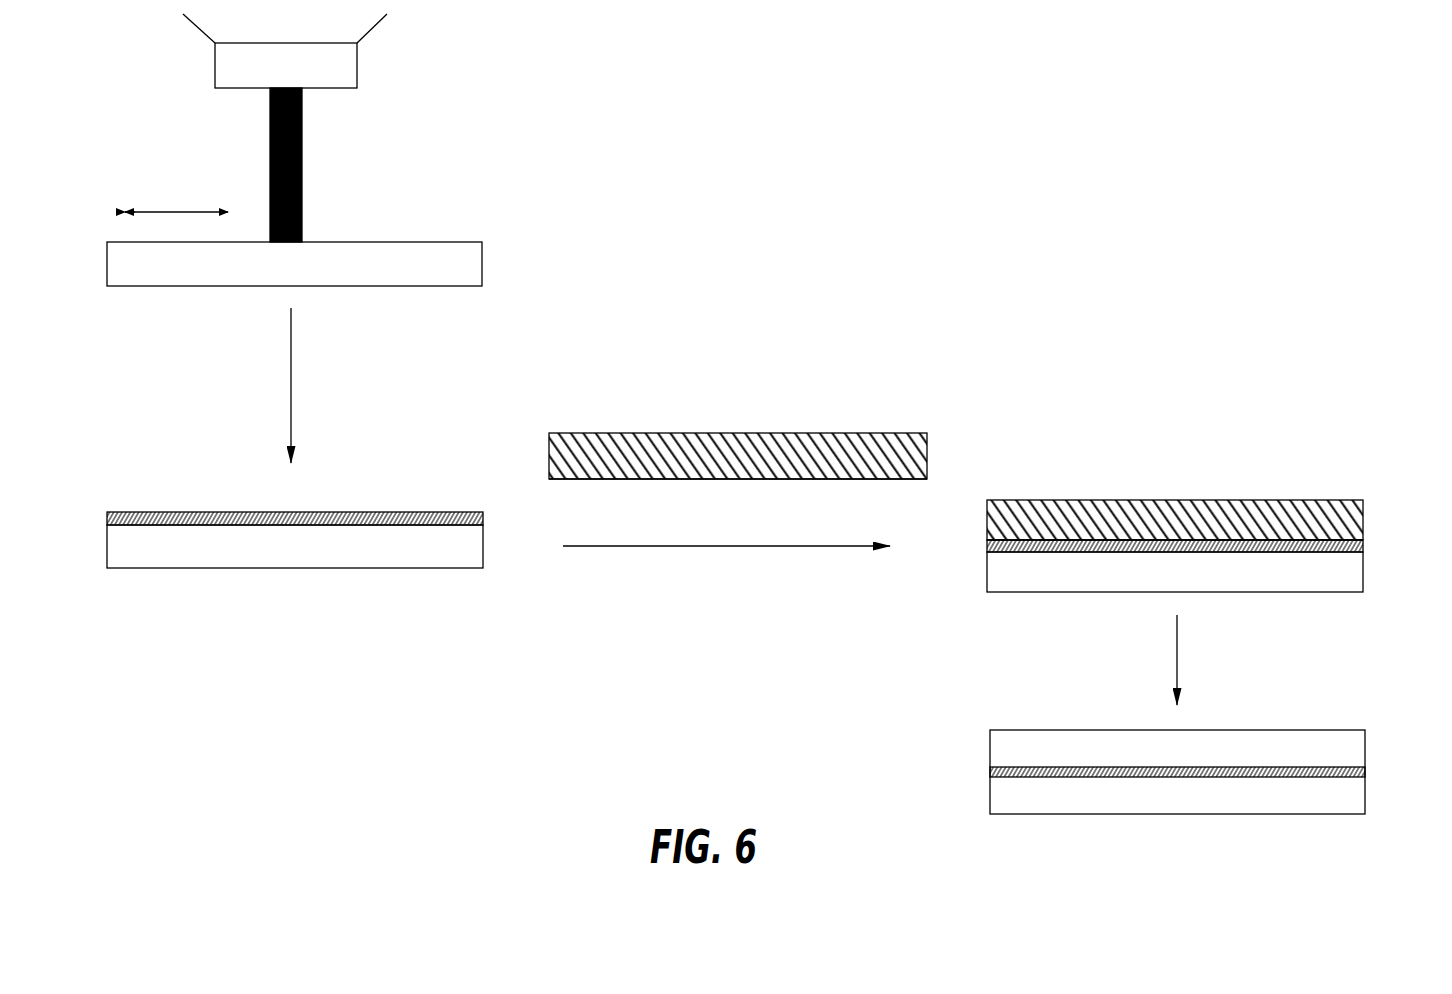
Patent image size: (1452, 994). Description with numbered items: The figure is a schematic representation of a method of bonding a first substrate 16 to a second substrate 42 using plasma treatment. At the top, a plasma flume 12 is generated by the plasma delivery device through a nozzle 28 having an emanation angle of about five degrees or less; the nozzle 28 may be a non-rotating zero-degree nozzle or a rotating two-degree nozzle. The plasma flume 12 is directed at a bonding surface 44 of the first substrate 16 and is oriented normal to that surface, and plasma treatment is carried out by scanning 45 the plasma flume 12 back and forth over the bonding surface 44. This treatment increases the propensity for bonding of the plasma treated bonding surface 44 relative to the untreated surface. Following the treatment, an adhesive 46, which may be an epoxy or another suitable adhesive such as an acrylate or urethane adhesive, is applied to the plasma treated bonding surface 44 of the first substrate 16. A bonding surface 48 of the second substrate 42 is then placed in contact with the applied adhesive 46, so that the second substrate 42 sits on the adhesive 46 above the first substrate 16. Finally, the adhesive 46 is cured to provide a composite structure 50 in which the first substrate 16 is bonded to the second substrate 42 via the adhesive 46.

The nozzle 28 is at (352, 64).
The plasma flume 12 is at (303, 150).
The scanning 45 is at (178, 212).
The first substrate 16 is at (477, 262).
The bonding surface 44 is at (408, 242).
The adhesive 46 is at (407, 517).
The second substrate 42 is at (845, 445).
The bonding surface of the second substrate 48 is at (858, 479).
The composite structure 50 is at (1381, 763).